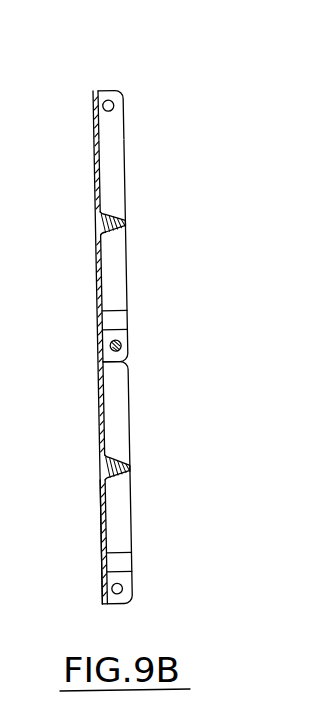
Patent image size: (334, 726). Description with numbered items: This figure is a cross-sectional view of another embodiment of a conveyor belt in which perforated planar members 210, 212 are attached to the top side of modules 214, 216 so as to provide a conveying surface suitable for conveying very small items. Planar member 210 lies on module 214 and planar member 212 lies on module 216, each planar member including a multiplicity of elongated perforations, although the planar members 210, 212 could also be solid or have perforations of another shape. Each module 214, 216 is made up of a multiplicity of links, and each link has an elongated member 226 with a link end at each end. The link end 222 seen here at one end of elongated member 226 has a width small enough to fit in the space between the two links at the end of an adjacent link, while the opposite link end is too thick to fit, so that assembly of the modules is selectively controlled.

The perforated planar member 210 is at (90, 146).
The perforated planar member 212 is at (100, 489).
The module 214 is at (113, 195).
The module 216 is at (115, 425).
The link end 222 is at (97, 90).
The elongated member 226 is at (108, 143).